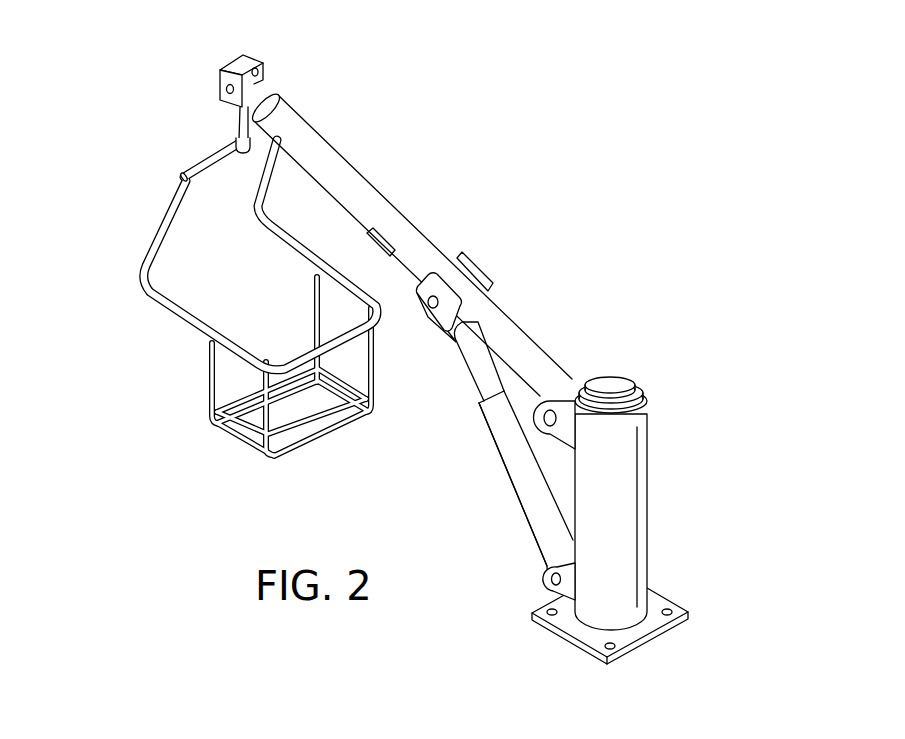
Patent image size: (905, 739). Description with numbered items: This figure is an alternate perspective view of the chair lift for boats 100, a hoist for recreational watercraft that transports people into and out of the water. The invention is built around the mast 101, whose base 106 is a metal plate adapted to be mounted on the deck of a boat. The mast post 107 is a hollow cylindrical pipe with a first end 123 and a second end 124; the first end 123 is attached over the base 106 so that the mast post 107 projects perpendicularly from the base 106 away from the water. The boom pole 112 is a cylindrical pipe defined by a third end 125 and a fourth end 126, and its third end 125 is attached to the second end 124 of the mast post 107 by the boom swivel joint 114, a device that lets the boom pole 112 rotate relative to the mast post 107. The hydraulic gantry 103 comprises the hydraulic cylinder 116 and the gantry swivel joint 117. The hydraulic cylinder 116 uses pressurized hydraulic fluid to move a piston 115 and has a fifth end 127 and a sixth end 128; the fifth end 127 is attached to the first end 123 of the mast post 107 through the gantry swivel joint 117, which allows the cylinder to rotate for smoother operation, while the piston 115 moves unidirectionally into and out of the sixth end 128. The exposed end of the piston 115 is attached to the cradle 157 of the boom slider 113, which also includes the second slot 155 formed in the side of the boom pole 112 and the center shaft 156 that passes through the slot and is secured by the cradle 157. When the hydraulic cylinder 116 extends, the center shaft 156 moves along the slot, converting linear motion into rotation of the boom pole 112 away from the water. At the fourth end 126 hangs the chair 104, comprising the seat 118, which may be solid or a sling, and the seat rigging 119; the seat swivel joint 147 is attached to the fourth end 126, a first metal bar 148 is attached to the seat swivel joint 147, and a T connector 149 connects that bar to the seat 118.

The chair lift for boats 100 is at (137, 78).
The mast 101 is at (647, 560).
The hydraulic gantry 103 is at (502, 482).
The chair 104 is at (227, 423).
The base 106 is at (623, 657).
The mast post 107 is at (647, 530).
The boom pole 112 is at (497, 325).
The boom slider 113 is at (427, 317).
The boom swivel joint 114 is at (527, 427).
The piston 115 is at (480, 383).
The hydraulic cylinder 116 is at (528, 512).
The gantry swivel joint 117 is at (548, 578).
The seat 118 is at (188, 325).
The seat rigging 119 is at (233, 97).
The first end 123 is at (647, 623).
The second end 124 is at (645, 398).
The third end 125 is at (567, 393).
The fourth end 126 is at (283, 110).
The fifth end 127 is at (565, 553).
The sixth end 128 is at (458, 343).
The seat swivel joint 147 is at (253, 62).
The first metal bar 148 is at (240, 120).
The T connector 149 is at (242, 152).
The second slot 155 is at (378, 233).
The center shaft 156 is at (432, 297).
The cradle 157 is at (480, 263).